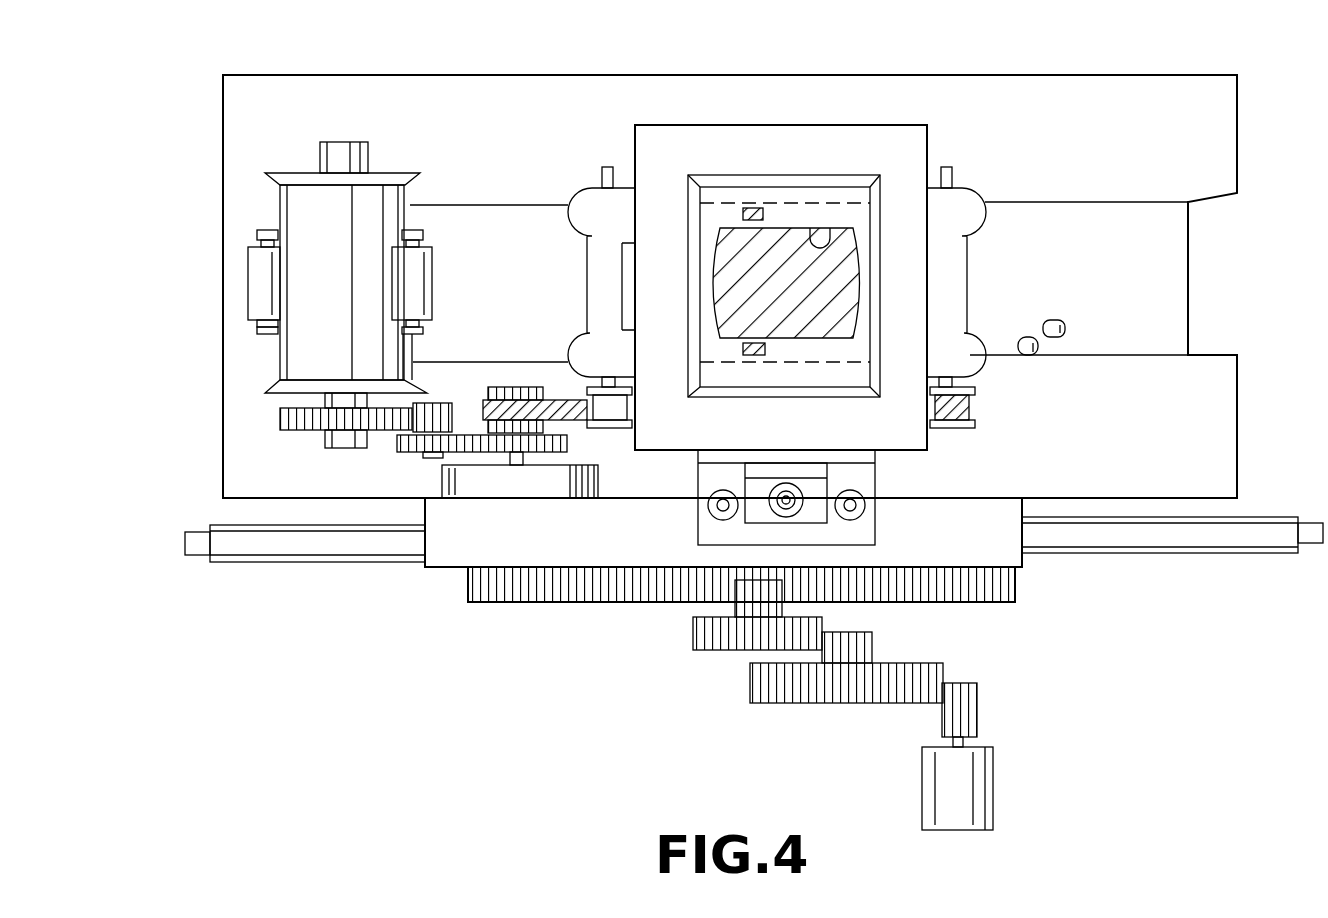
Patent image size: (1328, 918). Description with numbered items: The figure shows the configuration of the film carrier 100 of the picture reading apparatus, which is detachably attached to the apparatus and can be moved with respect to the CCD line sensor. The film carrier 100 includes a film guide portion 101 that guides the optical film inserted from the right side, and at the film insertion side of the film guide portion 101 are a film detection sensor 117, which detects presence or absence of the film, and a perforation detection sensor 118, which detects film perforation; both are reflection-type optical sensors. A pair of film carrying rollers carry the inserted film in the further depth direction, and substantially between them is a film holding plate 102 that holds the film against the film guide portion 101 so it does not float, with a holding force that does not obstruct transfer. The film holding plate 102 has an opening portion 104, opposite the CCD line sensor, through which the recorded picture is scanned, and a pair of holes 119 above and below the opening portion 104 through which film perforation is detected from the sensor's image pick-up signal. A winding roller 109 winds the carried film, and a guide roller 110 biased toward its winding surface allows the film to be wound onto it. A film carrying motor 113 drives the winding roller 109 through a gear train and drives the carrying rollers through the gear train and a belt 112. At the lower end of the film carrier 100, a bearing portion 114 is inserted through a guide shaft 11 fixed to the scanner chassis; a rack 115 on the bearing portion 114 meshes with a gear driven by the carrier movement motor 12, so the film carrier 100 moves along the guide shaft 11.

The film carrier 100 is at (288, 112).
The film guide portion 101 is at (1105, 243).
The film holding plate 102 is at (791, 215).
The opening portion 104 is at (820, 226).
The winding roller 109 is at (393, 178).
The guide roller 110 is at (407, 290).
The belt 112 is at (572, 413).
The film carrying motor 113 is at (467, 485).
The bearing portion 114 is at (1000, 542).
The rack 115 is at (1002, 582).
The film detection sensor 117 is at (1065, 325).
The perforation detection sensor 118 is at (1035, 355).
The holes 119 is at (750, 205).
The guide shaft 11 is at (245, 545).
The carrier movement motor 12 is at (980, 777).